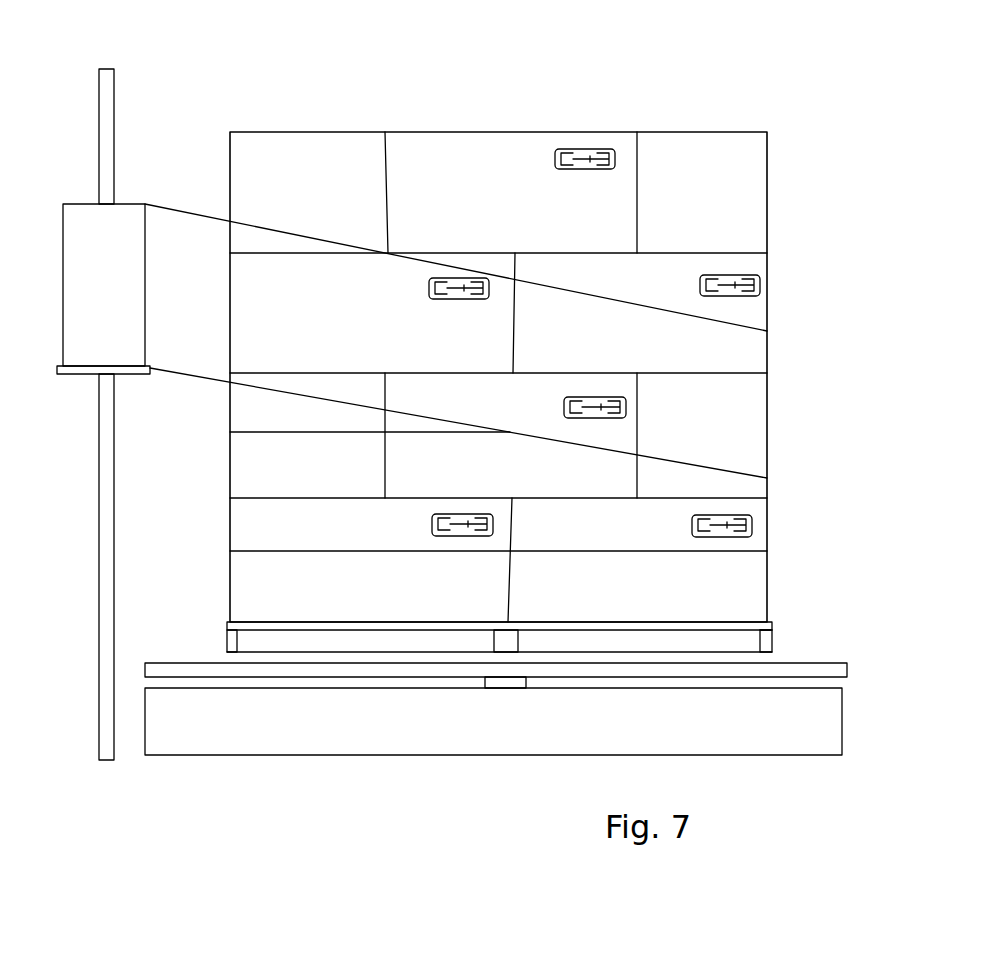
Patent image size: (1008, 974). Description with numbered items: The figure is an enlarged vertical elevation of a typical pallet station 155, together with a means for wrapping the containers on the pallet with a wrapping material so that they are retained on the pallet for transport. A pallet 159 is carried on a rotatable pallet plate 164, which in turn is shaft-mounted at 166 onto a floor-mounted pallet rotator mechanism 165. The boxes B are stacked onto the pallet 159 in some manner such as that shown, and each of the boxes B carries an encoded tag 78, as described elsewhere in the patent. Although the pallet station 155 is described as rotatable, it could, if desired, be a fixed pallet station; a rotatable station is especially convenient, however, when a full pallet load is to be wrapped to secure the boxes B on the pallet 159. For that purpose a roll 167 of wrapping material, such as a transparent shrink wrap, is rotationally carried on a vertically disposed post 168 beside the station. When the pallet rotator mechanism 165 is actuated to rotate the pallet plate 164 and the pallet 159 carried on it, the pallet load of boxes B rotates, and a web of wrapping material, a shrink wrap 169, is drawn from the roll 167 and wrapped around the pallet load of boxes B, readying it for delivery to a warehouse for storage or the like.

The boxes B is at (490, 157).
The encoded tag 78 is at (603, 150).
The pallet station 155 is at (775, 628).
The pallet 159 is at (232, 643).
The pallet plate 164 is at (813, 668).
The pallet rotator mechanism 165 is at (808, 728).
The shaft mount 166 is at (500, 689).
The roll of wrapping material 167 is at (77, 218).
The post 168 is at (101, 406).
The shrink wrap 169 is at (177, 252).